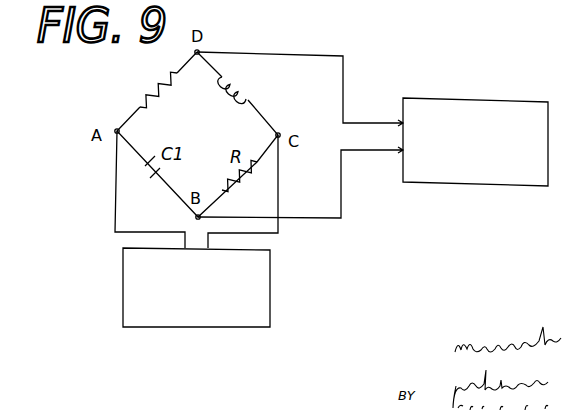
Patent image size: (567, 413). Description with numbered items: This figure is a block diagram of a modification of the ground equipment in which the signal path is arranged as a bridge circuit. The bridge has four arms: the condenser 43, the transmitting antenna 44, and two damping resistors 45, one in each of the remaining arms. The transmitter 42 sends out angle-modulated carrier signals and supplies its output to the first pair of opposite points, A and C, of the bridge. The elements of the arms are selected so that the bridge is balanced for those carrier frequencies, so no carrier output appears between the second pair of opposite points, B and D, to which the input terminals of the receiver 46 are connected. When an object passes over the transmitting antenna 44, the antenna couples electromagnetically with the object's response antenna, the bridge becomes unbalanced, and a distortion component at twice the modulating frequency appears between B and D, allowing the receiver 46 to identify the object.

The transmitter 42 is at (270, 275).
The condenser 43 is at (153, 183).
The transmitting antenna 44 is at (249, 86).
The damping resistors 45 is at (246, 181).
The receiver 46 is at (453, 183).